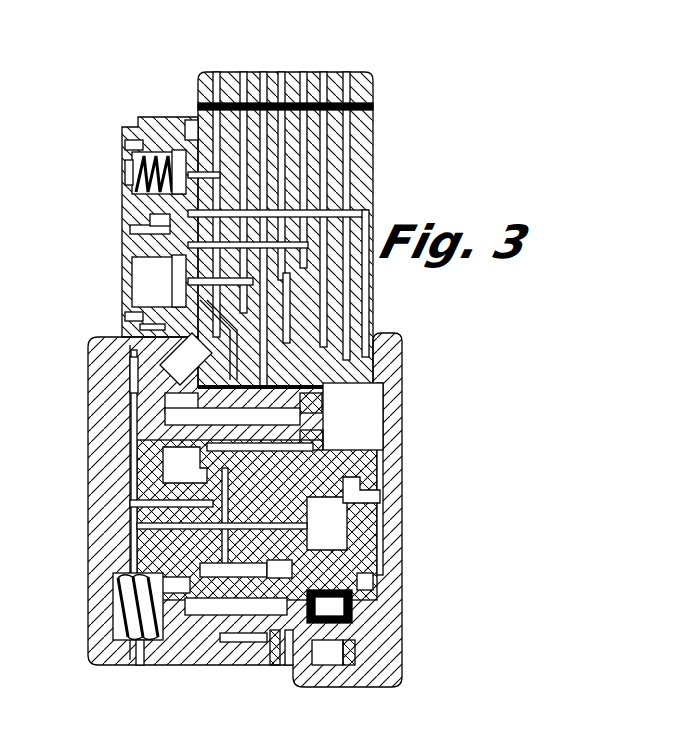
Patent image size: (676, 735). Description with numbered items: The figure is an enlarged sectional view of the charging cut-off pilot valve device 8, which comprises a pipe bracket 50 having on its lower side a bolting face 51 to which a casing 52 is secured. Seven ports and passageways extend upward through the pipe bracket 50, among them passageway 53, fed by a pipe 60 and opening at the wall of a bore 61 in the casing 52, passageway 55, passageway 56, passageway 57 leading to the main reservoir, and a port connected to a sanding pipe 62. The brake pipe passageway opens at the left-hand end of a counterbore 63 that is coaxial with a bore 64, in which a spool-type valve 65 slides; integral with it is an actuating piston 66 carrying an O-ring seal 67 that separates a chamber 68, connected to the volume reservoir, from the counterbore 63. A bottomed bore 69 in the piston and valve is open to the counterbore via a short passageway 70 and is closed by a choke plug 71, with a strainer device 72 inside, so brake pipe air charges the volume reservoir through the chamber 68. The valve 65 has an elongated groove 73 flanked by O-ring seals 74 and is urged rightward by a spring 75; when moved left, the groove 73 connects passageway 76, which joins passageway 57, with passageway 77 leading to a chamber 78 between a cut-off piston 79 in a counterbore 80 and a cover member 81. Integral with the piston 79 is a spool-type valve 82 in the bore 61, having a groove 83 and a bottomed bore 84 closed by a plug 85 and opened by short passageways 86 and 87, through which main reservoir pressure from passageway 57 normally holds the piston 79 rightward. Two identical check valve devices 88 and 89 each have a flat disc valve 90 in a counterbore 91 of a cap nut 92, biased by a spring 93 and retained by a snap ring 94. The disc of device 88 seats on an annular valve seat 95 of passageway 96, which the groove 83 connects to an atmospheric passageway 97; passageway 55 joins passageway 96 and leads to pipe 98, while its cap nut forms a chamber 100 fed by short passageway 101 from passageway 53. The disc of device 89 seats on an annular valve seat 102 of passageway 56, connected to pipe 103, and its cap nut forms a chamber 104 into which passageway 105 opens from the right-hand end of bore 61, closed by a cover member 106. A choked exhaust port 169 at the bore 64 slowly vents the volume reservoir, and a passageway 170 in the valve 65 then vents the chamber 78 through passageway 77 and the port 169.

The charging cut-off pilot valve device 8 is at (88, 493).
The pipe bracket 50 is at (347, 72).
The bolting face 51 is at (374, 107).
The casing 52 is at (366, 146).
The port and passageway 53 is at (212, 80).
The passageway 55 is at (243, 72).
The passageway 56 is at (264, 72).
The passageway 57 is at (283, 72).
The pipe 60 is at (216, 72).
The bore 61 is at (395, 446).
The pipe 62 is at (220, 70).
The counterbore 63 is at (332, 552).
The bore 64 is at (142, 645).
The spool-type valve 65 is at (202, 642).
The actuating piston 66 is at (380, 660).
The O-ring seal 67 is at (360, 665).
The chamber 68 is at (372, 580).
The bottomed bore 69 is at (330, 662).
The short passageway 70 is at (312, 578).
The choke plug 71 is at (352, 620).
The strainer device 72 is at (352, 606).
The elongated peripheral annular groove 73 is at (236, 616).
The O-ring seal 74 is at (240, 578).
The spring 75 is at (120, 590).
The passageway 76 is at (262, 338).
The passageway 77 is at (180, 495).
The chamber 78 is at (130, 358).
The cut-off piston 79 is at (130, 440).
The counterbore 80 is at (133, 382).
The cover member 81 is at (100, 572).
The spool-type valve 82 is at (325, 393).
The elongated peripheral annular groove 83 is at (244, 502).
The bottomed bore 84 is at (270, 451).
The plug 85 is at (310, 422).
The short passageway 86 is at (200, 398).
The short passageway 87 is at (300, 392).
The check valve device 88 is at (126, 286).
The check valve device 89 is at (122, 180).
The flat disc valve 90 is at (178, 150).
The counterbore 91 is at (135, 142).
The cap nut 92 is at (128, 230).
The spring 93 is at (134, 191).
The snap ring 94 is at (178, 246).
The annular valve seat 95 is at (186, 355).
The passageway 96 is at (286, 285).
The passageway 97 is at (236, 372).
The pipe 98 is at (246, 70).
The chamber 100 is at (140, 328).
The short passageway 101 is at (220, 269).
The annular valve seat 102 is at (132, 166).
The pipe 103 is at (284, 72).
The chamber 104 is at (192, 122).
The passageway 105 is at (360, 213).
The cover member 106 is at (395, 354).
The choked exhaust port 169 is at (286, 650).
The passageway 170 is at (190, 582).